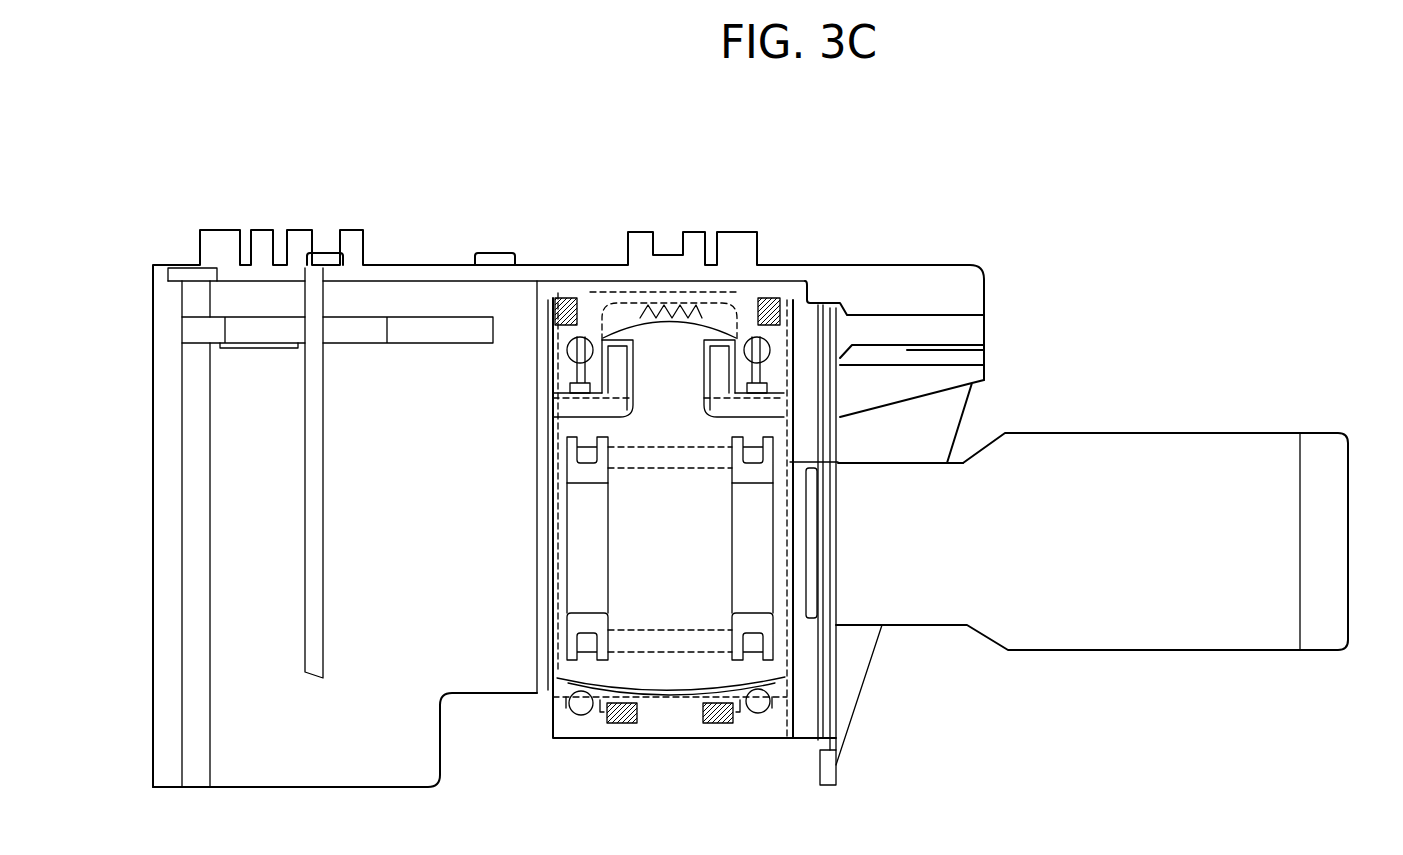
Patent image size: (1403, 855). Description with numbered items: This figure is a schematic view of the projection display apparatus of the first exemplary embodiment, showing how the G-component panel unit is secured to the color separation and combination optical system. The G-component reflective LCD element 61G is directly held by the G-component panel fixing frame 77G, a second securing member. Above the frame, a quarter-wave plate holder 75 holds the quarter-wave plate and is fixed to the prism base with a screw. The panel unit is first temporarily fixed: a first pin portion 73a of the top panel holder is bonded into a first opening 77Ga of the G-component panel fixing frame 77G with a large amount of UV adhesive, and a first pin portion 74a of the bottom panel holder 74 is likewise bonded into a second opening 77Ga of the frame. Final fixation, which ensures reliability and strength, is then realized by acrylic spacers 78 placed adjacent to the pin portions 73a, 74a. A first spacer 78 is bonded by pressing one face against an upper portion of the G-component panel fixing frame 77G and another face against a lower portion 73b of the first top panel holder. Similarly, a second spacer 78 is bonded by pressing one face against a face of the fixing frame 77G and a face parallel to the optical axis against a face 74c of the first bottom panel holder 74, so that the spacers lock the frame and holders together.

The G-component reflective LCD element 61G is at (1038, 455).
The first pin portion 73a is at (773, 352).
The lower portion 73b is at (758, 330).
The bottom panel holder 74 is at (673, 700).
The first pin portion 74a is at (772, 705).
The face 74c is at (722, 724).
The quarter-wave plate holder 75 is at (666, 330).
The G-component panel fixing frame 77G is at (788, 292).
The opening 77Ga is at (568, 713).
The spacer 78 is at (720, 724).